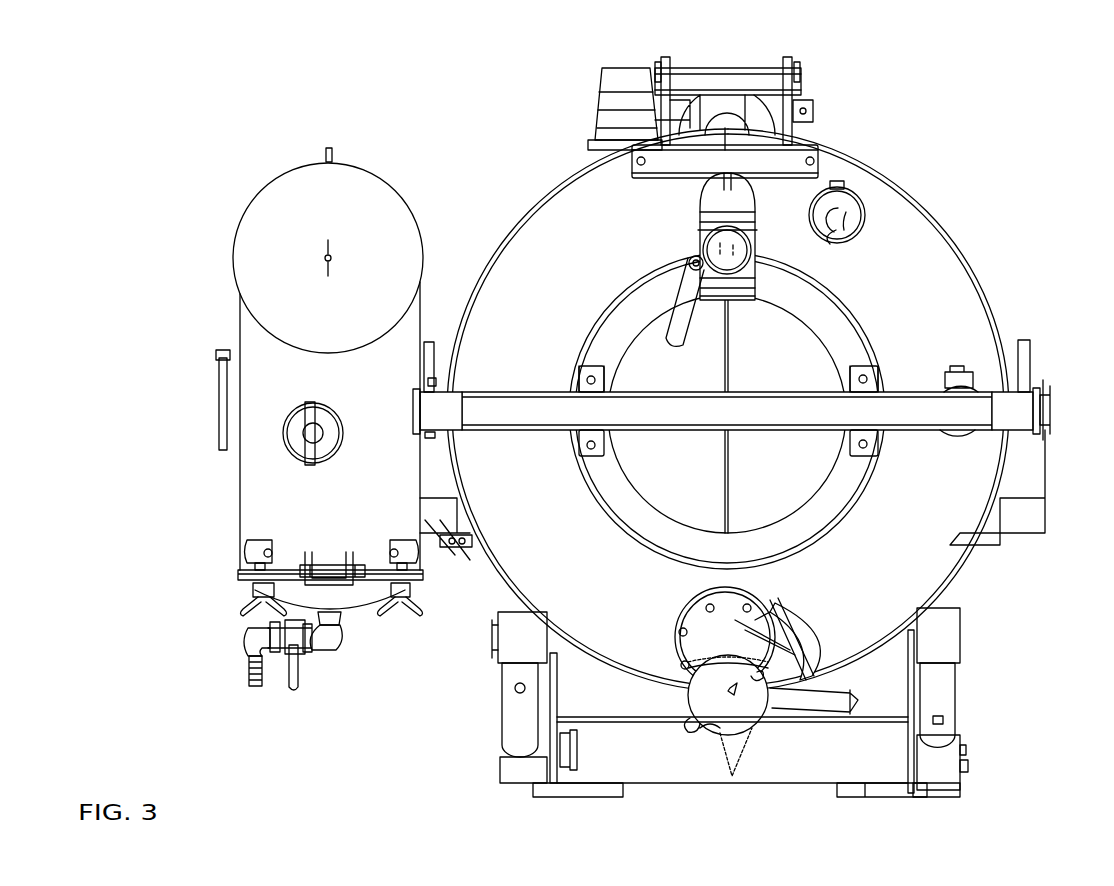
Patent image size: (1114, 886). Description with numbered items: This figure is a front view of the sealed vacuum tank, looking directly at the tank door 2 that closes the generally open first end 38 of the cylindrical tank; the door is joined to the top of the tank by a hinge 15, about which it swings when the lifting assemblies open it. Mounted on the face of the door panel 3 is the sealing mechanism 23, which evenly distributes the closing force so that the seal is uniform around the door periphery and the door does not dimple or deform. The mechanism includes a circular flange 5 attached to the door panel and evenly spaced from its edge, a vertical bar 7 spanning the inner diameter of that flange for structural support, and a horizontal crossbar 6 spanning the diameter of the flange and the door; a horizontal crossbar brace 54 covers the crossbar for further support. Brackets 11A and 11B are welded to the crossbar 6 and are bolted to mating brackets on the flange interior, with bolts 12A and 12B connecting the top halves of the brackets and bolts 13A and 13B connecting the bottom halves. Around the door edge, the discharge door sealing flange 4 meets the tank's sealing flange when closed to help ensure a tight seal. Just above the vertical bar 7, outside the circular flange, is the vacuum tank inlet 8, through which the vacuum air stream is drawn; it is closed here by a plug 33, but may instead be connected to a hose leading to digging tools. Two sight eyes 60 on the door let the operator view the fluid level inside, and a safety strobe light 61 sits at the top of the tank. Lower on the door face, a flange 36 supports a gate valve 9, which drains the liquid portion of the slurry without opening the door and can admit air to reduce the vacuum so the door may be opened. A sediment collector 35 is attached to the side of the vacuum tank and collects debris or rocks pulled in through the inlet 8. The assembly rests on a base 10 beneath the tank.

The tank door 2 is at (504, 159).
The door panel 3 is at (580, 600).
The discharge door sealing flange 4 is at (943, 677).
The circular flange 5 is at (870, 488).
The horizontal crossbar 6 is at (1002, 403).
The vertical bar 7 is at (735, 465).
The vacuum tank inlet 8 is at (738, 192).
The gate valve 9 is at (915, 757).
The base frame 10 is at (832, 770).
The bracket 11A is at (876, 385).
The bracket 11B is at (589, 379).
The bolt 12A is at (864, 371).
The bolt 12B is at (583, 368).
The bolt 13A is at (876, 452).
The bolt 13B is at (580, 453).
The hinge 15 is at (760, 75).
The sealing mechanism 23 is at (821, 362).
The plug 33 is at (737, 247).
The sediment collector 35 is at (265, 503).
The flange 36 is at (673, 643).
The first end 38 is at (573, 167).
The horizontal crossbar brace 54 is at (535, 410).
The sight eye 60 is at (858, 215).
The safety strobe light 61 is at (617, 93).